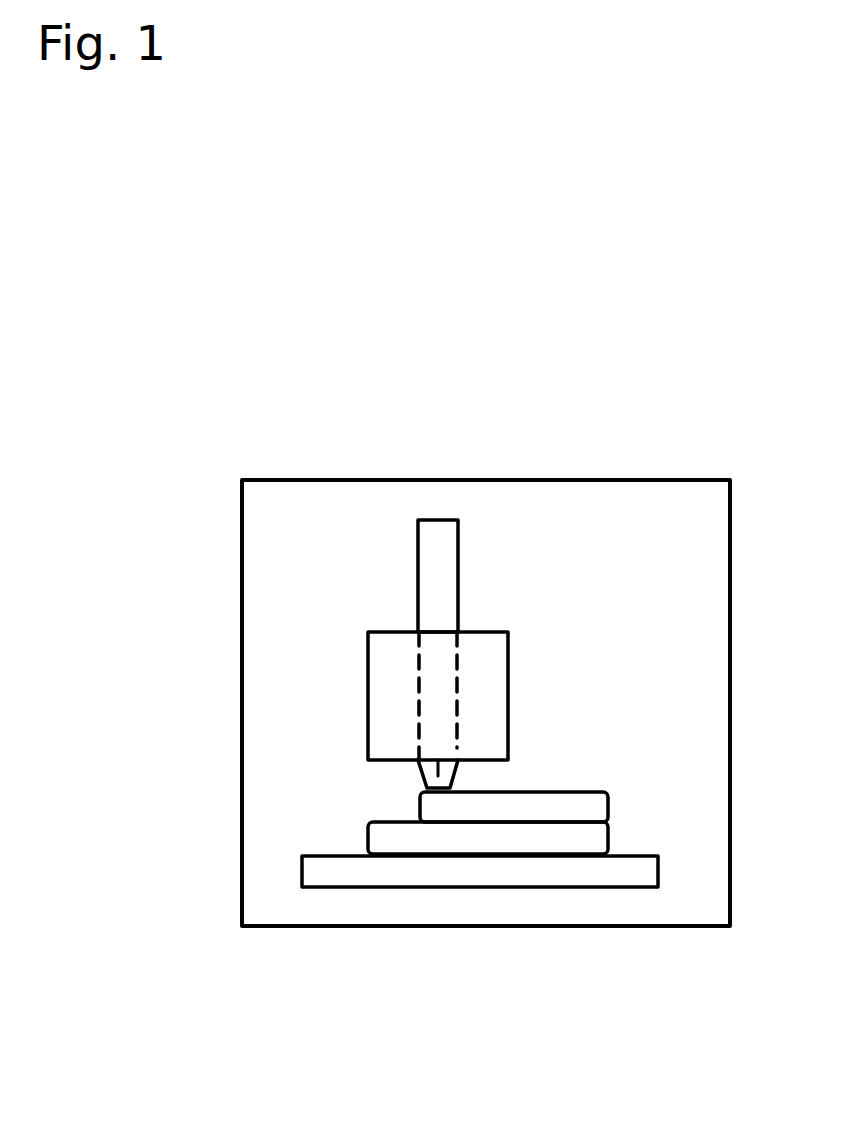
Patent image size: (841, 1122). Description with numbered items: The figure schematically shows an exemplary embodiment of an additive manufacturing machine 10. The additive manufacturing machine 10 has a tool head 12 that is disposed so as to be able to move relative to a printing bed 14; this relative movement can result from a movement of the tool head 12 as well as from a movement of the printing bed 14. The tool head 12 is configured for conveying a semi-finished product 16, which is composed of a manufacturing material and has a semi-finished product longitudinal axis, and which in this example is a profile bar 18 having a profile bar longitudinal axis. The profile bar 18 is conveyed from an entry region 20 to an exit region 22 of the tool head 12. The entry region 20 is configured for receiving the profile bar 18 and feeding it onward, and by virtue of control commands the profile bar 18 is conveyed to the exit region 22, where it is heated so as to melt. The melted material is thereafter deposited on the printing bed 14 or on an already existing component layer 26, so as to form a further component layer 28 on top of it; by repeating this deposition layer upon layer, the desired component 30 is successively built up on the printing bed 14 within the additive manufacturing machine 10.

The additive manufacturing machine 10 is at (242, 480).
The tool head 12 is at (508, 632).
The printing bed 14 is at (440, 872).
The semi-finished product 16 is at (433, 563).
The profile bar 18 is at (430, 595).
The entry region 20 is at (403, 610).
The exit region 22 is at (438, 776).
The component layer 26 is at (570, 805).
The further component layer 28 is at (598, 807).
The component 30 is at (551, 748).